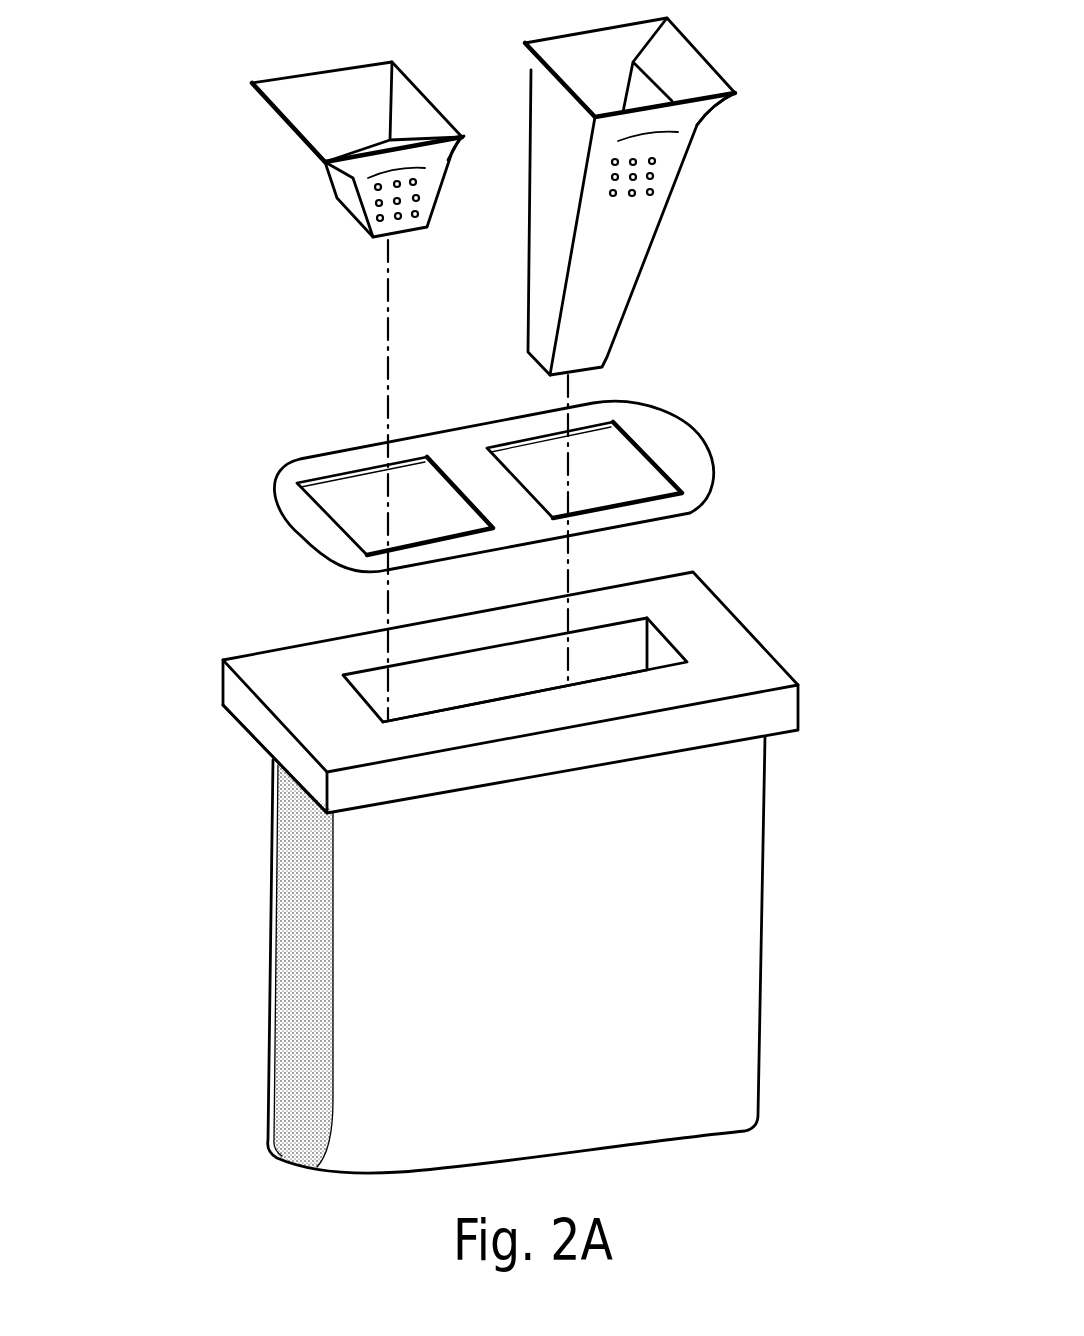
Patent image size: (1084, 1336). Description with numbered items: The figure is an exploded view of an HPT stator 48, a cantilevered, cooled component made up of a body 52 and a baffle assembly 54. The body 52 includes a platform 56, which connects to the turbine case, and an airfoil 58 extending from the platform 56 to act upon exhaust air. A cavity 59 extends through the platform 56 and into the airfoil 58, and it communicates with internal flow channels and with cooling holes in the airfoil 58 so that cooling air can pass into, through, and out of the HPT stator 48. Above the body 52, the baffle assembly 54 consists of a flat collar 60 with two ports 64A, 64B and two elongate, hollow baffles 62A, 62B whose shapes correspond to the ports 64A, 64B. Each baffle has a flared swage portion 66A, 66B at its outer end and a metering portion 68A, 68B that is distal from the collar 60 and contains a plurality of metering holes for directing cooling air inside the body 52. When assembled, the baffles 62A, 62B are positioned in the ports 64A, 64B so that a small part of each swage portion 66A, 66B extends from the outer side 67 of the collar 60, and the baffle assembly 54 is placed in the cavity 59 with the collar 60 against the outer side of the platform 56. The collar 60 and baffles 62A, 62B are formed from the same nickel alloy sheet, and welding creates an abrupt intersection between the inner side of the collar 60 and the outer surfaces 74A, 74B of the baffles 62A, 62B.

The HPT stator 48 is at (880, 33).
The body 52 is at (236, 730).
The baffle assembly 54 is at (110, 33).
The platform 56 is at (268, 757).
The airfoil 58 is at (270, 968).
The cavity 59 is at (368, 670).
The collar 60 is at (296, 536).
The baffle 62A is at (322, 177).
The baffle 62B is at (660, 238).
The port 64A is at (422, 547).
The port 64B is at (602, 512).
The swage portion 66A is at (272, 107).
The swage portion 66B is at (715, 65).
The outer side 67 is at (663, 452).
The metering portion 68A is at (343, 208).
The metering portion 68B is at (625, 312).
The outer surface 74A is at (460, 152).
The outer surface 74B is at (723, 114).